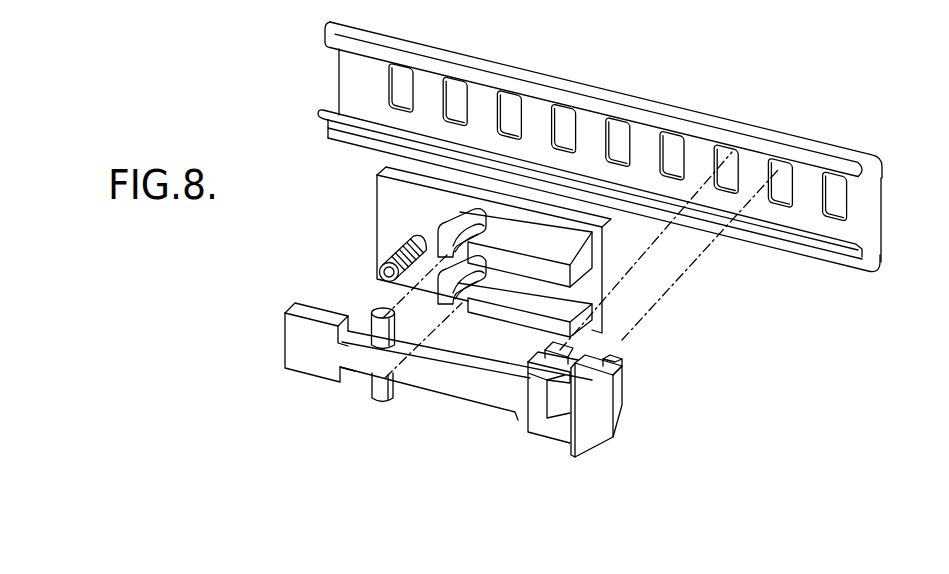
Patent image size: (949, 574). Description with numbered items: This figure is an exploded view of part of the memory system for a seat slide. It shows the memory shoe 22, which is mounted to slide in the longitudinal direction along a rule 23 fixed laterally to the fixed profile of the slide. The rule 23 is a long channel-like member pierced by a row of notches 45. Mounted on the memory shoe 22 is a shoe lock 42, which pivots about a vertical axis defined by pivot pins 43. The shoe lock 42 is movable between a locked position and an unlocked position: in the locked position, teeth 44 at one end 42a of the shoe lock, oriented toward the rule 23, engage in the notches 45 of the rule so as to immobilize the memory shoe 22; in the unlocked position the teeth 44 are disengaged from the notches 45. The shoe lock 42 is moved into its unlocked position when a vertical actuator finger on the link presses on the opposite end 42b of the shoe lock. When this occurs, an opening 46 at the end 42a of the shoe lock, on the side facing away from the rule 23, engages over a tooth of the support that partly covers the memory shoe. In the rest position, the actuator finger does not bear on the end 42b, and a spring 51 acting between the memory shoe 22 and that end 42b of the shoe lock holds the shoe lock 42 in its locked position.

The memory shoe 22 is at (390, 217).
The rule 23 is at (867, 202).
The shoe lock 42 is at (463, 382).
The end of the shoe lock 42a is at (587, 432).
The end of the shoe lock 42b is at (303, 338).
The pivot pins 43 is at (385, 340).
The teeth 44 is at (557, 350).
The notches 45 is at (727, 157).
The opening 46 is at (560, 395).
The spring 51 is at (392, 250).